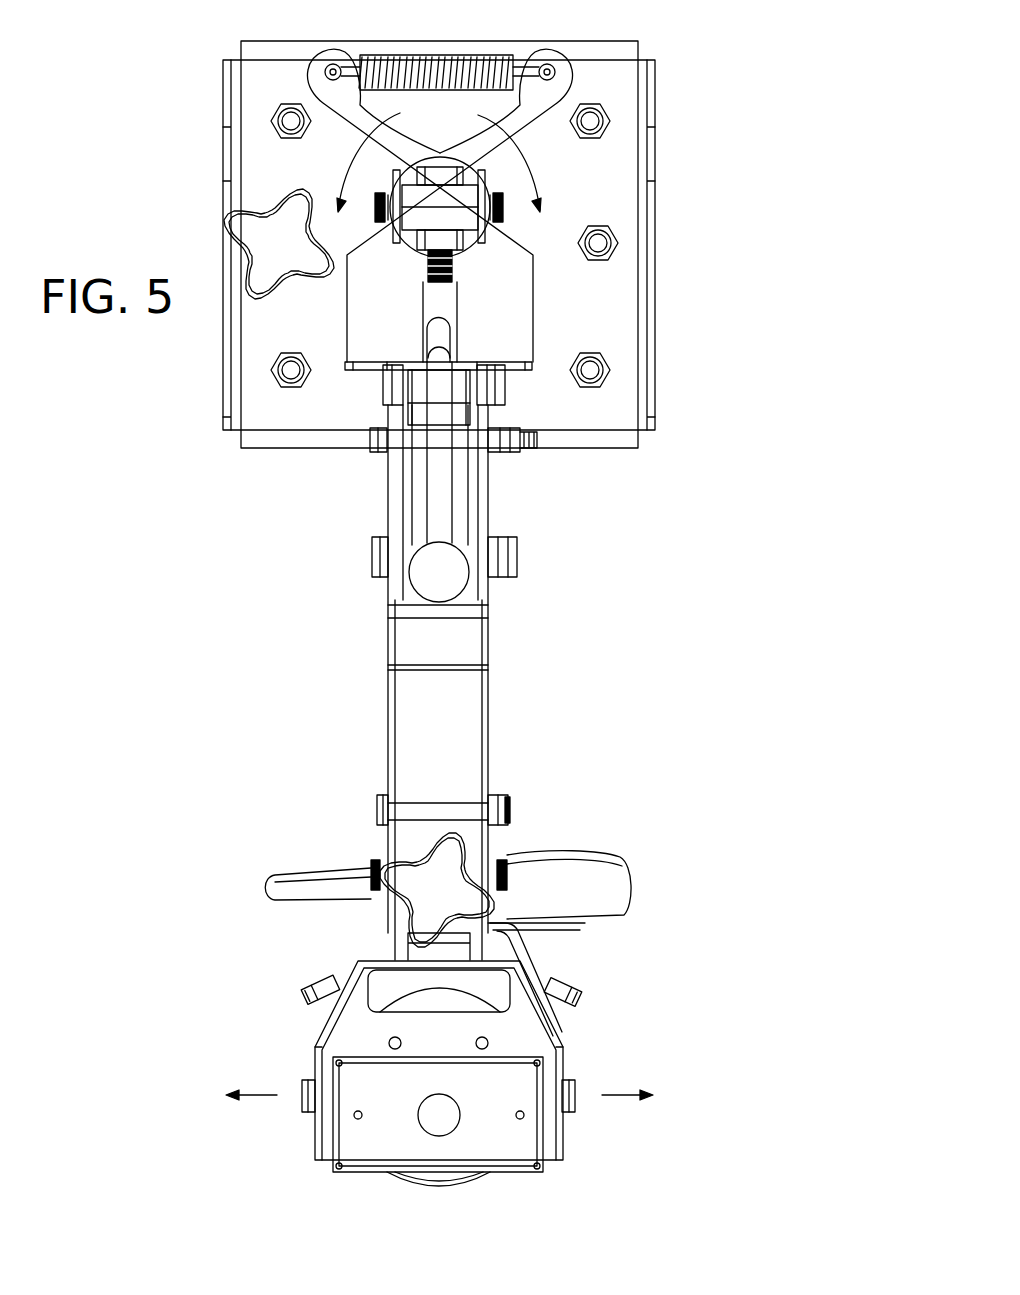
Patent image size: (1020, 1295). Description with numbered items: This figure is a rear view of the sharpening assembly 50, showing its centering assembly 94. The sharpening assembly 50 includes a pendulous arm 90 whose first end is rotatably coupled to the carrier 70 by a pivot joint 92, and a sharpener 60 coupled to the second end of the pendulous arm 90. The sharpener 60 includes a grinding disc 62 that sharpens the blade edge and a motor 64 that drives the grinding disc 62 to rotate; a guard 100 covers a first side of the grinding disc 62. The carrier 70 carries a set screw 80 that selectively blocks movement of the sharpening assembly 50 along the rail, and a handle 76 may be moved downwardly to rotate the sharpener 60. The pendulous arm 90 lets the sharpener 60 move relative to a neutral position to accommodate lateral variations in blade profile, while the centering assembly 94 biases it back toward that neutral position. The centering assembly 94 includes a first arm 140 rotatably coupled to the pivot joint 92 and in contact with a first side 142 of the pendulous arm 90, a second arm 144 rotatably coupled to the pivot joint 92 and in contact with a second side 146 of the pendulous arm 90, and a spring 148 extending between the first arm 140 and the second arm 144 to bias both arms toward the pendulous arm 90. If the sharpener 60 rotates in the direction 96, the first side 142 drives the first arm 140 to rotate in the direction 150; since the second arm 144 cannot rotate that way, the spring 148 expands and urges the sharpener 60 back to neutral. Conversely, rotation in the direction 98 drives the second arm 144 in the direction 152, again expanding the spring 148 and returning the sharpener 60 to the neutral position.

The sharpening assembly 50 is at (228, 577).
The sharpener 60 is at (577, 1030).
The grinding disc 62 is at (303, 877).
The motor 64 is at (388, 987).
The carrier 70 is at (628, 267).
The handle 76 is at (443, 500).
The set screw 80 is at (243, 232).
The pendulous arm 90 is at (527, 667).
The pivot joint 92 is at (467, 158).
The centering assembly 94 is at (267, 85).
The direction 96 is at (616, 1095).
The direction 98 is at (252, 1095).
The guard 100 is at (620, 890).
The first arm 140 is at (518, 287).
The first side 142 is at (465, 297).
The second arm 144 is at (363, 330).
The second side 146 is at (413, 315).
The spring 148 is at (460, 55).
The direction 150 is at (530, 148).
The direction 152 is at (353, 146).